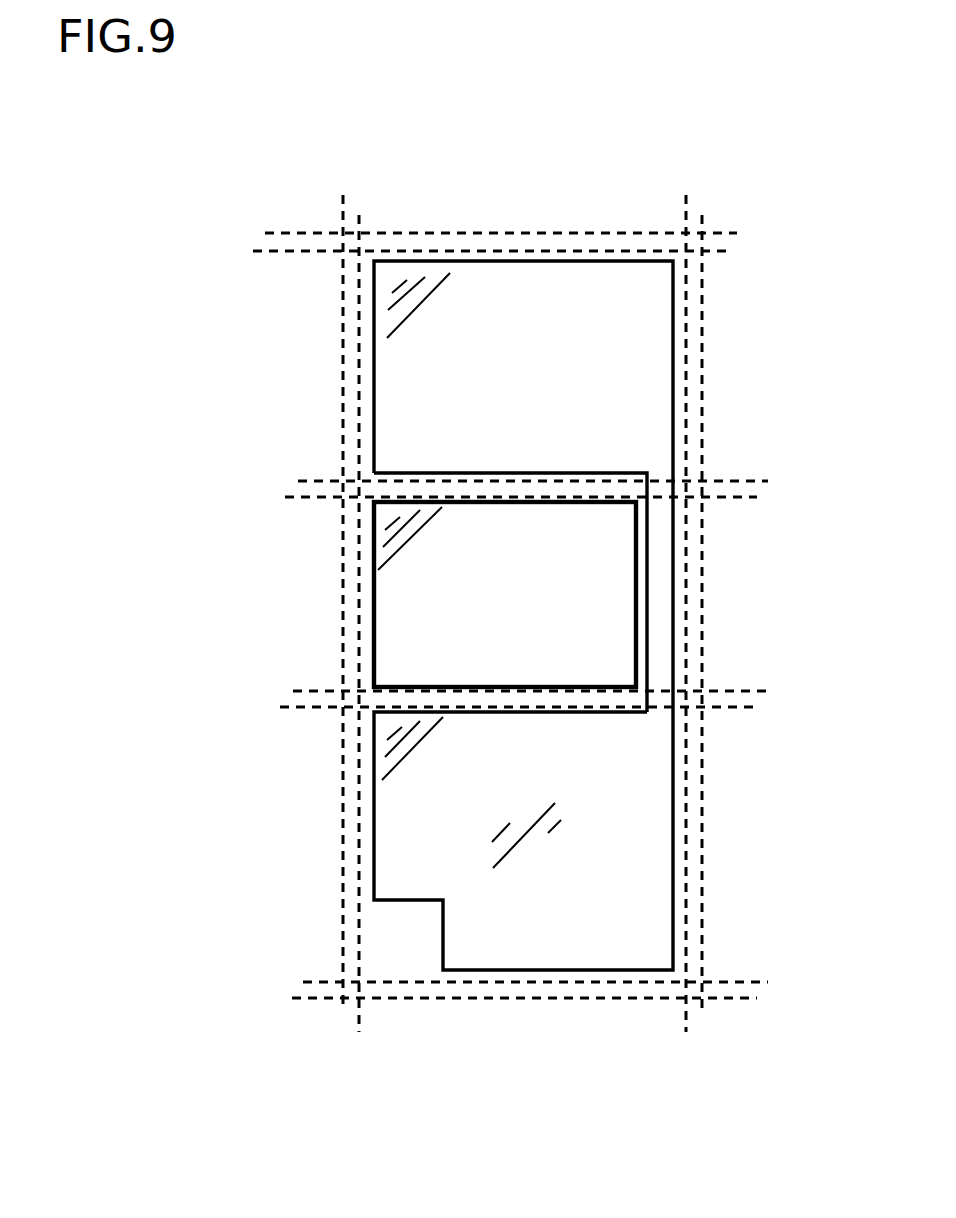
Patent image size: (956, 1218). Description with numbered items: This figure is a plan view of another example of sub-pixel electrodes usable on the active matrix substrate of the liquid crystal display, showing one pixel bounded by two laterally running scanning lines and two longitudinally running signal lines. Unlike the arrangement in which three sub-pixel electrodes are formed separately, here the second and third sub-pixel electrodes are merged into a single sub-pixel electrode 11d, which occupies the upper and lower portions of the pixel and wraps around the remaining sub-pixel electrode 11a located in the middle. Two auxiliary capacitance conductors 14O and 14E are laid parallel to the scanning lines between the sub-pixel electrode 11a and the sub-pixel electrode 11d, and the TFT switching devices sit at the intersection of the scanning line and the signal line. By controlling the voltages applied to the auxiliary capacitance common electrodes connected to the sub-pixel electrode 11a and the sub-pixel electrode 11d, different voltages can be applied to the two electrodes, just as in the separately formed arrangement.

The auxiliary capacitance conductor 14O is at (484, 488).
The auxiliary capacitance conductor 14E is at (484, 700).
The sub-pixel electrode 11d is at (642, 427).
The sub-pixel electrode 11a is at (603, 612).